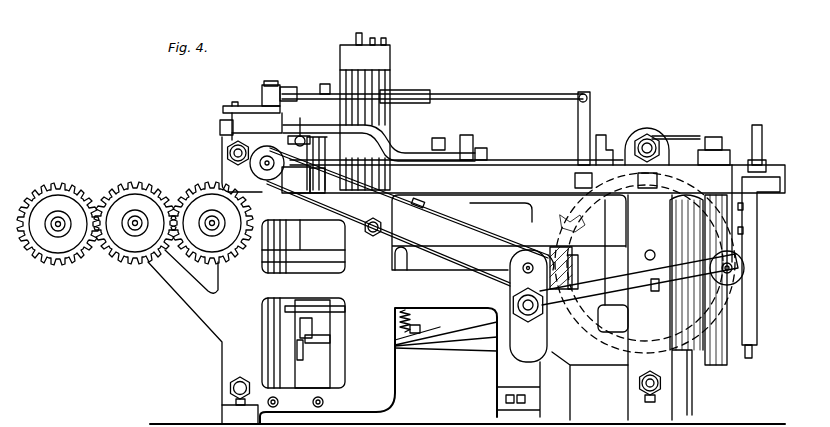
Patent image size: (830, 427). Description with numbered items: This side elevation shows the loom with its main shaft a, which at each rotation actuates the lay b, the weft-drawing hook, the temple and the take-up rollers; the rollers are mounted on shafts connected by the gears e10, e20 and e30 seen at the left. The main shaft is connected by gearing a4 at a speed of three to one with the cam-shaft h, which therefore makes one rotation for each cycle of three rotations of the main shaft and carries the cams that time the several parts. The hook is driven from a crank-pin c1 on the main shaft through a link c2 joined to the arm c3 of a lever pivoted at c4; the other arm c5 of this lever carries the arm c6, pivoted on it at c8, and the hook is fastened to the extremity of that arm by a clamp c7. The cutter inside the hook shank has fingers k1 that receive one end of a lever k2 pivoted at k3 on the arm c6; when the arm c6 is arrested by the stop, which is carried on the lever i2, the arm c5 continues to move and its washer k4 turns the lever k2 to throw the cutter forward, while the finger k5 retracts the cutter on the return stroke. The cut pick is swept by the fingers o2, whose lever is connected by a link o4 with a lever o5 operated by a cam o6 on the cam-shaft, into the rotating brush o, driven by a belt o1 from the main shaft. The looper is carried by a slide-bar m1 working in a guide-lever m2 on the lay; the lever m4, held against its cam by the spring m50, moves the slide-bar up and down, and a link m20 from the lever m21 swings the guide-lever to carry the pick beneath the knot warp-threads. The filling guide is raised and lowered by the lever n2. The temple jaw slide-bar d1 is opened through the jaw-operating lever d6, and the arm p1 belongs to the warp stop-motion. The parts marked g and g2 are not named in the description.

The gear e30 is at (56, 192).
The gear e20 is at (123, 193).
The gear e10 is at (192, 195).
The cylinder g is at (392, 48).
The cylinder studs g2 is at (355, 45).
The lay b is at (322, 90).
The link o4 is at (478, 96).
The lever o5 is at (578, 134).
The lever k2 is at (388, 141).
The fingers k1 is at (301, 119).
The pivot k3 is at (437, 139).
The finger k5 is at (462, 148).
The washer k4 is at (484, 150).
The arm c6 is at (530, 159).
The arm of actuating-lever c5 is at (531, 192).
The pivot c8 is at (607, 152).
The pivot c4 is at (728, 152).
The clamp c7 is at (275, 147).
The fingers o2 is at (290, 134).
The rotating brush o is at (283, 176).
The belt o1 is at (396, 199).
The slide-bar d1 is at (272, 220).
The lever i2 is at (447, 234).
The temple-jaw-operating lever d6 is at (333, 265).
The gearing a4 is at (570, 220).
The arm of lever c3 is at (600, 208).
The cam-shaft h is at (648, 250).
The main shaft a is at (528, 306).
The crank-pin c1 is at (518, 305).
The link c2 is at (622, 283).
The cam o6 is at (700, 292).
The arm p1 is at (758, 312).
The link m20 is at (266, 319).
The guide-lever m2 is at (312, 344).
The lever m21 is at (346, 308).
The slide-bar m1 is at (300, 346).
The spring m50 is at (400, 318).
The lever m4 is at (445, 334).
The lever n2 is at (451, 355).